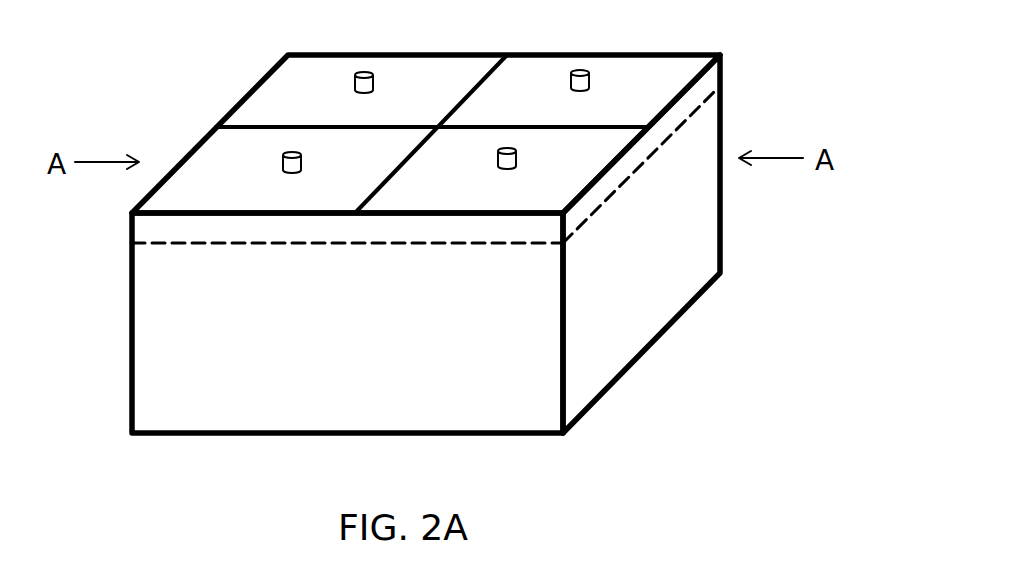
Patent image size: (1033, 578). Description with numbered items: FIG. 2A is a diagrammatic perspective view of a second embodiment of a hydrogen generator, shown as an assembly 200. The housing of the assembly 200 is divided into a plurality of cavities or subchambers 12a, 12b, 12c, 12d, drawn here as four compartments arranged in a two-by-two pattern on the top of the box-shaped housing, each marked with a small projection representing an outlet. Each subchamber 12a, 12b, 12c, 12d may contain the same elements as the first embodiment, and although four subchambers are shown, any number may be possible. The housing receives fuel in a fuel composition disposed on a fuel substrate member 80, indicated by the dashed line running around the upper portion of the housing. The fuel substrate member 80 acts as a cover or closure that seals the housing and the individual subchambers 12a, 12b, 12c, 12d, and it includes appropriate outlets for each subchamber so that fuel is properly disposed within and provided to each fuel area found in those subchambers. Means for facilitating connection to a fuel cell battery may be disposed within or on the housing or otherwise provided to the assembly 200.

The assembly 200 is at (230, 190).
The fuel substrate member 80 is at (252, 230).
The subchamber 12a is at (253, 152).
The subchamber 12b is at (557, 178).
The subchamber 12c is at (328, 100).
The subchamber 12d is at (633, 98).